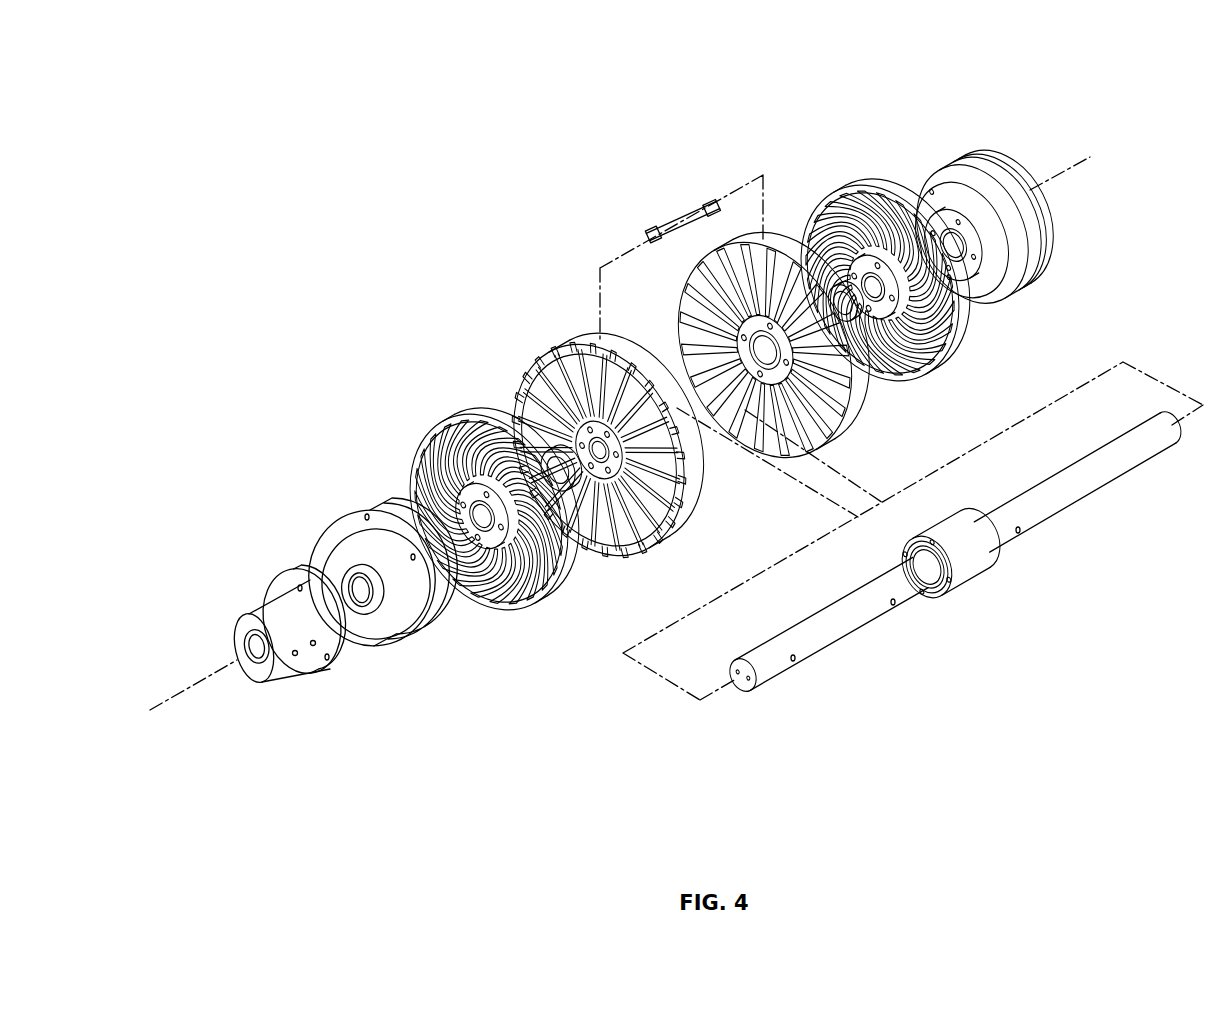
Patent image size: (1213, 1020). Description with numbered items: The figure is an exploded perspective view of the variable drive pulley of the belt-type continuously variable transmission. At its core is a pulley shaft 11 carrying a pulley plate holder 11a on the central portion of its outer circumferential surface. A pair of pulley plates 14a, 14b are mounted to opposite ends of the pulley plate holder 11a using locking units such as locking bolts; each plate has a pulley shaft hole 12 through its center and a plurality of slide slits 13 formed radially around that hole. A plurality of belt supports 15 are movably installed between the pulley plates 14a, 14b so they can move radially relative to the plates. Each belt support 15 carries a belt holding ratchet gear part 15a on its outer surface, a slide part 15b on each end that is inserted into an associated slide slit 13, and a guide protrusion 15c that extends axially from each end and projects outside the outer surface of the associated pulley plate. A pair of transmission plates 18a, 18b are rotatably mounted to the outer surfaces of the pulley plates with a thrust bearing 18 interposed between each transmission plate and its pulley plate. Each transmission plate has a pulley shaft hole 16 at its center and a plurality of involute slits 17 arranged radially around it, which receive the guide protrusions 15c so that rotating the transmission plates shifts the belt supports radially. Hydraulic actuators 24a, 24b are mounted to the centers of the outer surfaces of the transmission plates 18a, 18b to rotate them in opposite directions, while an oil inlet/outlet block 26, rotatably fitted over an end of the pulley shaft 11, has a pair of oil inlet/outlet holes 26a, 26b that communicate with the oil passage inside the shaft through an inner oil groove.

The pulley shaft 11 is at (955, 588).
The pulley plate holder 11a is at (972, 570).
The pulley shaft hole 12 is at (571, 332).
The slide slits 13 is at (527, 375).
The pulley plate 14a is at (599, 382).
The pulley plate 14b is at (868, 415).
The belt supports 15 is at (650, 150).
The belt holding ratchet gear part 15a is at (697, 210).
The slide part 15b is at (654, 228).
The guide protrusion 15c is at (644, 233).
The pulley shaft hole 16 is at (525, 495).
The involute slits 17 is at (482, 515).
The thrust bearing 18 is at (548, 455).
The transmission plate 18a is at (460, 472).
The transmission plate 18b is at (884, 180).
The hydraulic actuator 24a is at (418, 658).
The hydraulic actuator 24b is at (1050, 278).
The oil inlet/outlet block 26 is at (246, 597).
The oil inlet/outlet hole 26a is at (314, 648).
The oil inlet/outlet hole 26b is at (294, 658).